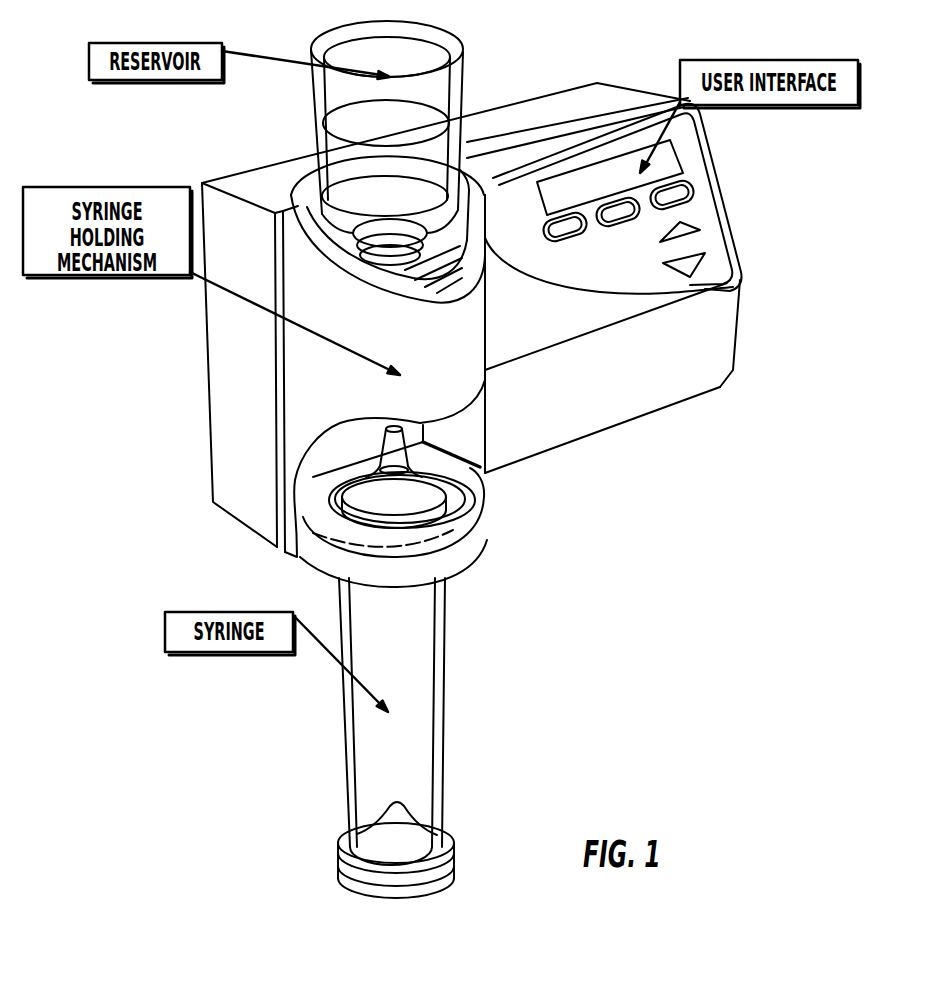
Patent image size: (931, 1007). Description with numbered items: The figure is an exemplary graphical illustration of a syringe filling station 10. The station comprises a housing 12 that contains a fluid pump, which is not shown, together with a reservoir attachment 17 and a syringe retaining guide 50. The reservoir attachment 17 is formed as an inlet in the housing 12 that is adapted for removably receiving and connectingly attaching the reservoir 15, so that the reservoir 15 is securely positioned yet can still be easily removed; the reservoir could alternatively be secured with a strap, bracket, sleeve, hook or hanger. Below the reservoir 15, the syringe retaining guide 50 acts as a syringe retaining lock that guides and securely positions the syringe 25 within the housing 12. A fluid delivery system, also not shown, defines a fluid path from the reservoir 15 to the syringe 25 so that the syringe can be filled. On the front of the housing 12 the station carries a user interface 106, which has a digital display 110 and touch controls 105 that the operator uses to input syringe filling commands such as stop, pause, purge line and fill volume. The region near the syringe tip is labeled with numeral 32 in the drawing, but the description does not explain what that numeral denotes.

The syringe filling station 10 is at (786, 267).
The housing 12 is at (290, 370).
The reservoir 15 is at (445, 93).
The reservoir attachment 17 is at (400, 287).
The syringe 25 is at (443, 696).
The reservoir neck outlet 32 is at (355, 152).
The syringe retaining guide 50 is at (450, 500).
The touch controls 105 is at (688, 192).
The user interface 106 is at (633, 260).
The digital display 110 is at (670, 163).